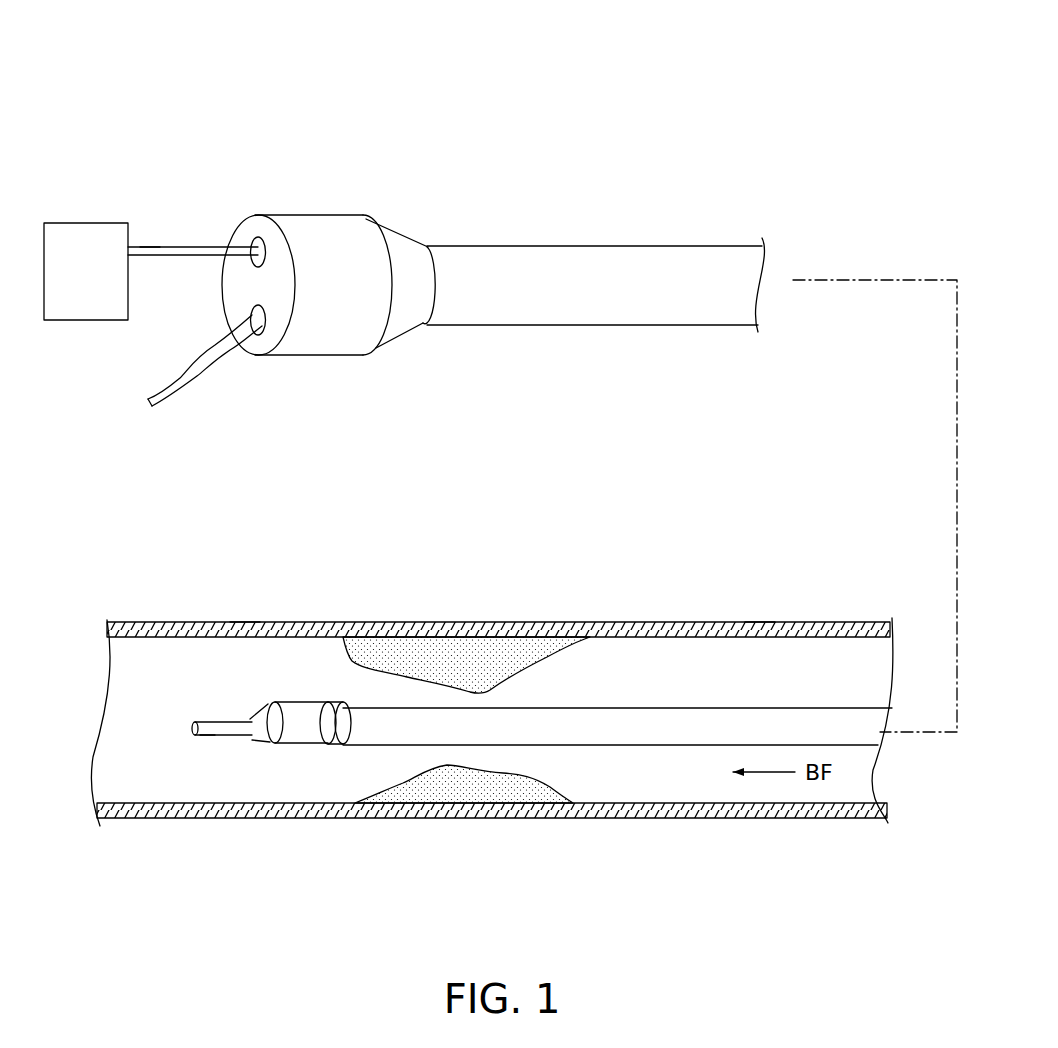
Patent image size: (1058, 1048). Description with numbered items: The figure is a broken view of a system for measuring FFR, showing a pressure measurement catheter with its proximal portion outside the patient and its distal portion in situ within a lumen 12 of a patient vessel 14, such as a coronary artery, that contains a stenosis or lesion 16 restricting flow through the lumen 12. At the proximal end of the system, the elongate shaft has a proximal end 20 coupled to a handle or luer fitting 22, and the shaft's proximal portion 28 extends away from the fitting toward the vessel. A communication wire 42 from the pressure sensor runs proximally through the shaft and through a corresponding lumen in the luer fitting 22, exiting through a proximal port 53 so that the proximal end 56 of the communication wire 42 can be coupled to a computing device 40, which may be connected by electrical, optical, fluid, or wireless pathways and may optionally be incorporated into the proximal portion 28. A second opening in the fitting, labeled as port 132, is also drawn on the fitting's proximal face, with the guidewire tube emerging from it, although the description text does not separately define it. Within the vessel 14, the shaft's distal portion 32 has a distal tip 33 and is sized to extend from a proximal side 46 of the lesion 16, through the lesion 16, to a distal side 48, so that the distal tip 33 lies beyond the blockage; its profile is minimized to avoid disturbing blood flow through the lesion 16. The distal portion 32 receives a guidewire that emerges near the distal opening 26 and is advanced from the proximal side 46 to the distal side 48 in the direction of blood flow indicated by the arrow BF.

The lumen 12 is at (617, 678).
The vessel 14 is at (675, 621).
The lesion 16 is at (480, 662).
The proximal end 20 is at (421, 327).
The luer fitting 22 is at (335, 228).
The distal opening 26 is at (248, 740).
The proximal portion 28 is at (652, 203).
The distal portion 32 is at (340, 751).
The distal tip 33 is at (298, 694).
The computing device 40 is at (73, 223).
The communication wire 42 is at (183, 243).
The proximal side 46 is at (755, 655).
The distal side 48 is at (242, 660).
The proximal port 53 is at (252, 234).
The proximal end 56 is at (147, 243).
The tube port 132 is at (254, 355).